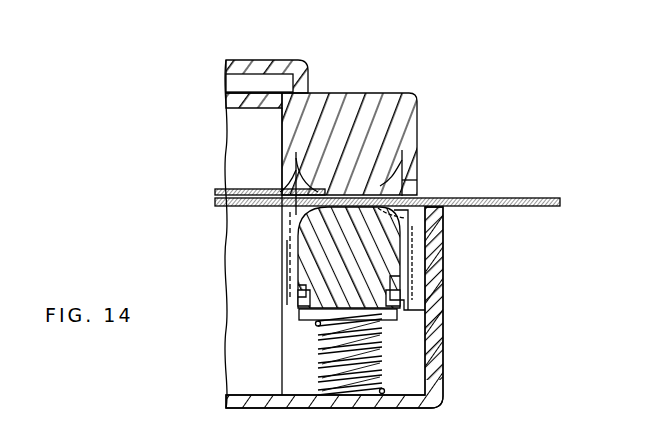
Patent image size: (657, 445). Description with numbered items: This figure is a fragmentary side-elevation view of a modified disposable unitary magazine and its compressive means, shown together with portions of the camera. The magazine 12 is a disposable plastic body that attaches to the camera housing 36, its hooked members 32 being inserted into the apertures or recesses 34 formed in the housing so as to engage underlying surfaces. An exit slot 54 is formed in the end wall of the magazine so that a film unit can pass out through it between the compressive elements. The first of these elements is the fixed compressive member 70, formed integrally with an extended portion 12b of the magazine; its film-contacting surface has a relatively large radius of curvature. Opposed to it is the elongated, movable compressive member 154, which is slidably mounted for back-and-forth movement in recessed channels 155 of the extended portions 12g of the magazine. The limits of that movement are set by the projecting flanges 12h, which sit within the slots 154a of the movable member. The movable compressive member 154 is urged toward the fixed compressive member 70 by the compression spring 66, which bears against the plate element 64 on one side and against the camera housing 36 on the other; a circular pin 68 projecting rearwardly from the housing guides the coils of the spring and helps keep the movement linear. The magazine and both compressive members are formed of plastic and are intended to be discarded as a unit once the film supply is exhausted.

The magazine 12 is at (258, 58).
The extended portion of the magazine 12b is at (410, 175).
The extended portions of the magazine 12g is at (410, 276).
The projecting flanges 12h is at (408, 298).
The hooked members 32 is at (410, 218).
The apertures or recesses 34 is at (412, 214).
The camera housing 36 is at (443, 340).
The exit slot 54 is at (440, 184).
The plate element 64 is at (302, 318).
The compression spring 66 is at (320, 334).
The circular pin 68 is at (320, 369).
The fixed compressive member 70 is at (300, 180).
The elongated compressive member 154 is at (305, 232).
The slots 154a is at (300, 286).
The recessed channels 155 is at (286, 243).